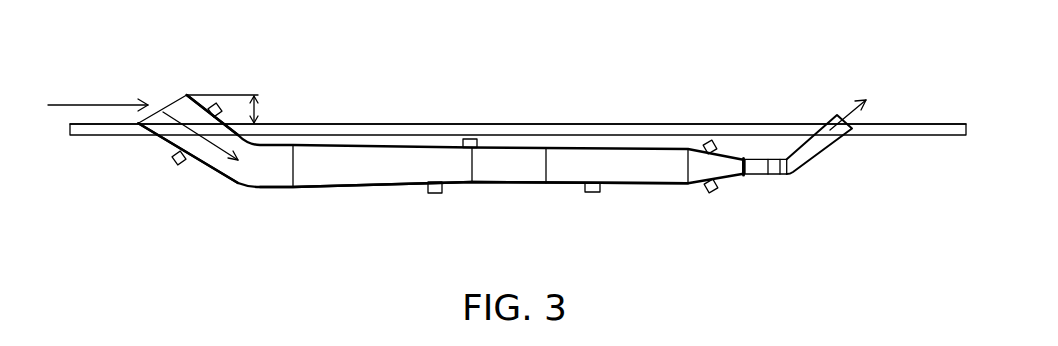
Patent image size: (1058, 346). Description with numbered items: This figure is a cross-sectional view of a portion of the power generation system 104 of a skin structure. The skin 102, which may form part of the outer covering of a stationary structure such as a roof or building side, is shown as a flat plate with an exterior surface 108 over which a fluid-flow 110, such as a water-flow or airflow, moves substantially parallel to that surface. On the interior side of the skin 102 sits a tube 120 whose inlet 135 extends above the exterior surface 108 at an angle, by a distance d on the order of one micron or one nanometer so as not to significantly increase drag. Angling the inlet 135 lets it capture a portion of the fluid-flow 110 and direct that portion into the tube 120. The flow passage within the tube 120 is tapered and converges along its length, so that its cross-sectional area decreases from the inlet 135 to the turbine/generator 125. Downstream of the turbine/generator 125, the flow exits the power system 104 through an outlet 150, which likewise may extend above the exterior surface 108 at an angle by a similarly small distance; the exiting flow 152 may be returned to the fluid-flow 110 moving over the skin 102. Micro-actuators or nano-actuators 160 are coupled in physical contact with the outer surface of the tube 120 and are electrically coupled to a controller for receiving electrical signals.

The skin 102 is at (895, 130).
The power generation system 104 is at (288, 202).
The exterior surface 108 is at (312, 124).
The fluid-flow 110 is at (70, 105).
The tube 120 is at (350, 188).
The turbine/generator 125 is at (752, 167).
The inlet 135 is at (171, 102).
The outlet 150 is at (808, 145).
The exiting flow 152 is at (850, 107).
The micro-actuators or nano-actuators 160 is at (210, 110).
The distance d is at (260, 108).